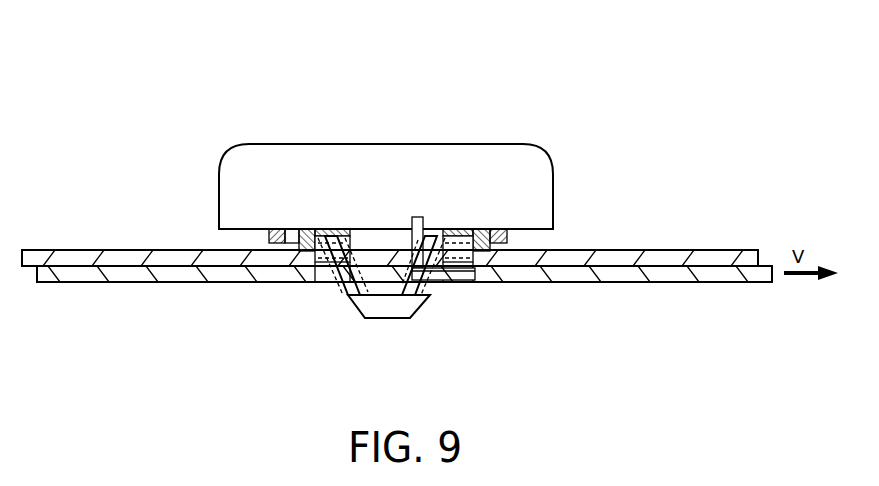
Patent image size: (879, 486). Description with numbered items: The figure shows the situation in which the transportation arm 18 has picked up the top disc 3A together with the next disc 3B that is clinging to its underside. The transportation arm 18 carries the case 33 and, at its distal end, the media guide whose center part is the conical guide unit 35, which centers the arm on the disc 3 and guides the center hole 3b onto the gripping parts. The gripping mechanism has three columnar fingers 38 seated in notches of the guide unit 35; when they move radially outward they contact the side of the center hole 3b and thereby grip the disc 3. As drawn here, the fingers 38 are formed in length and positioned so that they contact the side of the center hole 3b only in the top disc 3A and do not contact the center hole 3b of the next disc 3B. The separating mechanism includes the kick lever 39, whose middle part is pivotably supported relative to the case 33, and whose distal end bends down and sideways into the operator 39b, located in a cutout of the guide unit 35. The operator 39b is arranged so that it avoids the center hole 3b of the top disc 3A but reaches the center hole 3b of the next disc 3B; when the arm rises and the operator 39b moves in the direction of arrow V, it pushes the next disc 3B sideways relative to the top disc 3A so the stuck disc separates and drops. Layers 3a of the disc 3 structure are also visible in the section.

The transportation arm 18 is at (404, 82).
The case 33 is at (287, 144).
The fingers 38 is at (350, 247).
The guide unit 35 is at (385, 318).
The kick lever 39 is at (475, 304).
The operator 39b is at (468, 283).
The disc 3 is at (397, 270).
The top disc 3A is at (73, 250).
The next disc 3B is at (92, 282).
The substrate hole 3a is at (165, 250).
The center hole 3b is at (337, 280).